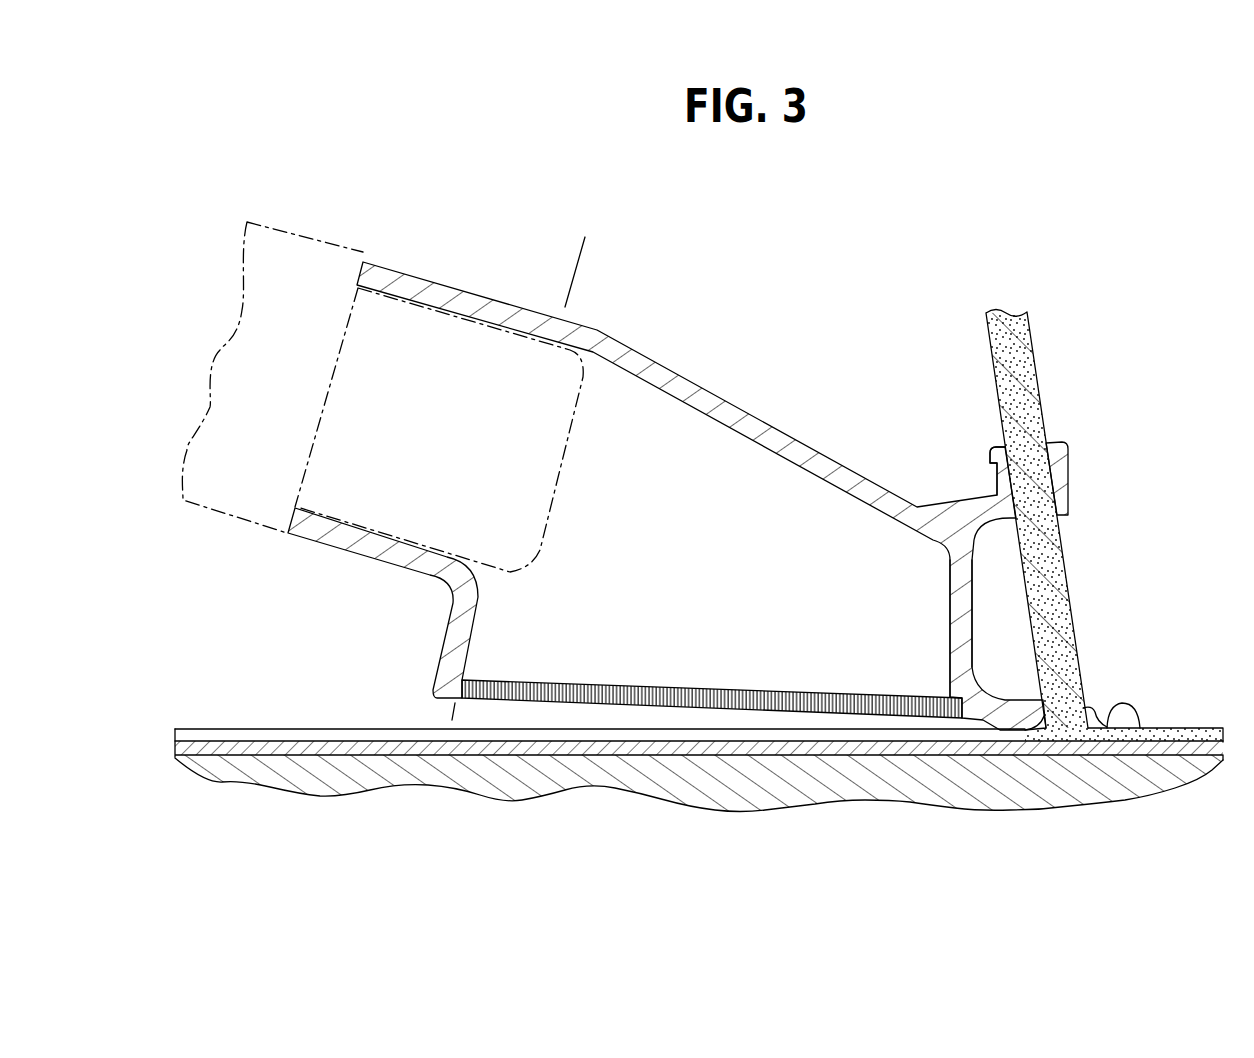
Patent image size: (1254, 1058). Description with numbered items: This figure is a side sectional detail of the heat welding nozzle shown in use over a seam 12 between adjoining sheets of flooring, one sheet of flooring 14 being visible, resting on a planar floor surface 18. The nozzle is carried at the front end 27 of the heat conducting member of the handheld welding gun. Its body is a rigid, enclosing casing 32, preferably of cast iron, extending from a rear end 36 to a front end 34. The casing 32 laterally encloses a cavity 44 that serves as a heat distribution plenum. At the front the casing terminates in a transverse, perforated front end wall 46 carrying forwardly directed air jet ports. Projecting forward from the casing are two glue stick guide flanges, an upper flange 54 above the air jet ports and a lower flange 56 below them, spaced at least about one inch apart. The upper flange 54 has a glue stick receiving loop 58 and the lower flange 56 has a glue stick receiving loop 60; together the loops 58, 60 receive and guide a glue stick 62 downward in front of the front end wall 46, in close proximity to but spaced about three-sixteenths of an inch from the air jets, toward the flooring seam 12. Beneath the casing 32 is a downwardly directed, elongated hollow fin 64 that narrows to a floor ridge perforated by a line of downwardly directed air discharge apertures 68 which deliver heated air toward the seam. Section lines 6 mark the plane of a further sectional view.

The section line 6- 6 is at (578, 247).
The seam 12 is at (190, 735).
The sheet of flooring 14 is at (223, 733).
The planar floor surface 18 is at (262, 752).
The front end 27 is at (405, 322).
The casing 32 is at (735, 405).
The front end 34 is at (938, 493).
The rear end 36 is at (667, 445).
The cavity 44 is at (762, 577).
The front end wall 46 is at (947, 612).
The upper flange 54 is at (973, 493).
The lower flange 56 is at (1117, 710).
The glue stick receiving loop 58 is at (1058, 483).
The glue stick receiving loop 60 is at (1088, 710).
The glue stick 62 is at (1035, 365).
The fin 64 is at (447, 633).
The air discharge apertures 68 is at (498, 704).